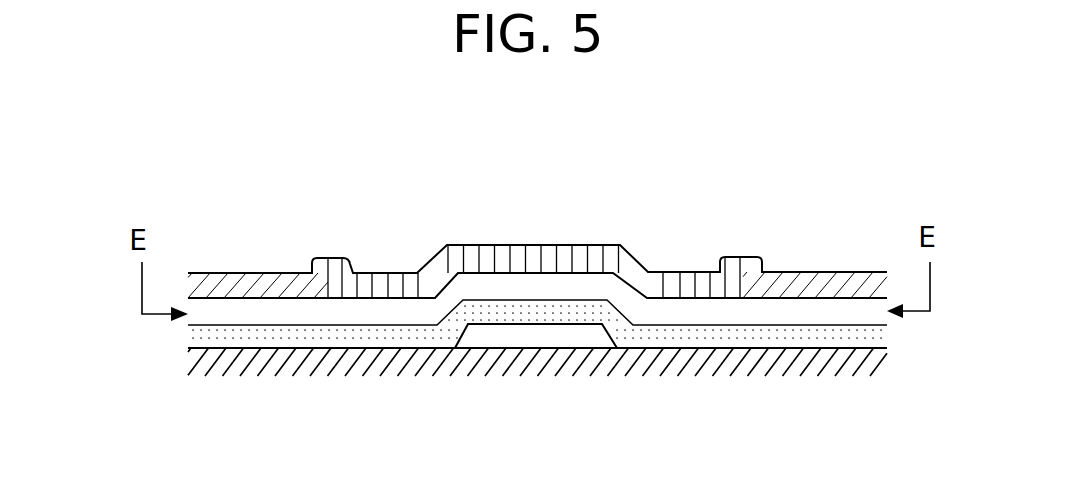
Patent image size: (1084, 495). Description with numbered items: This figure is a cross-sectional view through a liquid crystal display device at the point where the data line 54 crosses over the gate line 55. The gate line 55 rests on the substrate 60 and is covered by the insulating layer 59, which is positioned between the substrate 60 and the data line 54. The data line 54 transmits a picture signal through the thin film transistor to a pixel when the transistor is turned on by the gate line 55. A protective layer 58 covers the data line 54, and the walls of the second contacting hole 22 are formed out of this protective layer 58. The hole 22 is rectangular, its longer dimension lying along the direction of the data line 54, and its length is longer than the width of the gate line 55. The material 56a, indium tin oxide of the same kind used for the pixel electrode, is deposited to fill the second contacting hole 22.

The protective layer 58 is at (243, 278).
The second contacting hole 22 is at (329, 290).
The material 56a is at (477, 255).
The data line 54 is at (735, 306).
The gate line 55 is at (498, 343).
The substrate 60 is at (712, 368).
The insulating layer 59 is at (847, 337).